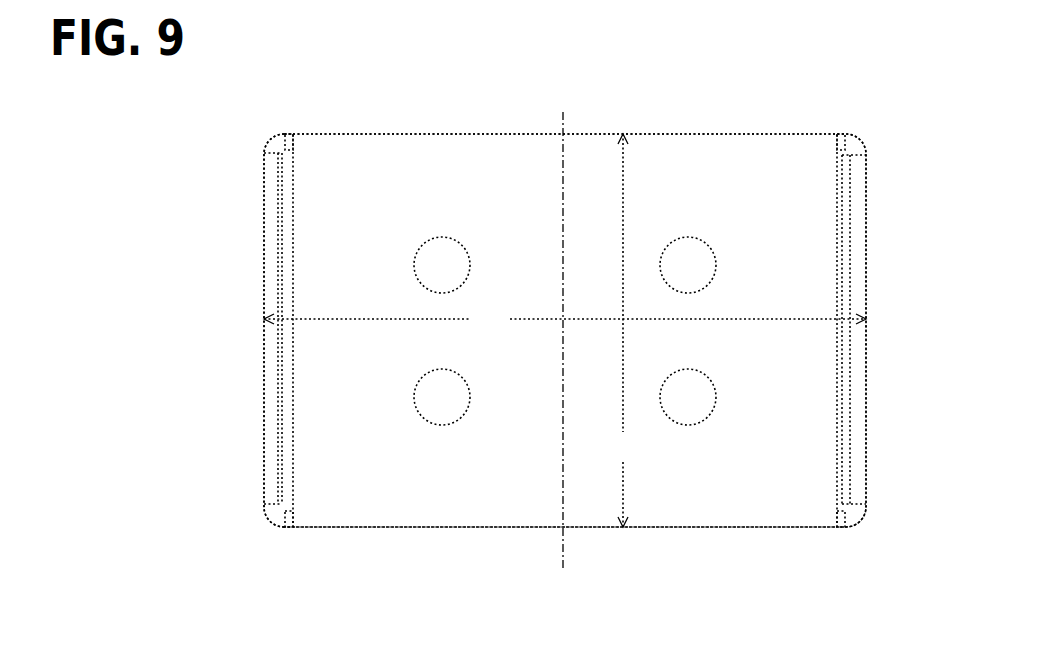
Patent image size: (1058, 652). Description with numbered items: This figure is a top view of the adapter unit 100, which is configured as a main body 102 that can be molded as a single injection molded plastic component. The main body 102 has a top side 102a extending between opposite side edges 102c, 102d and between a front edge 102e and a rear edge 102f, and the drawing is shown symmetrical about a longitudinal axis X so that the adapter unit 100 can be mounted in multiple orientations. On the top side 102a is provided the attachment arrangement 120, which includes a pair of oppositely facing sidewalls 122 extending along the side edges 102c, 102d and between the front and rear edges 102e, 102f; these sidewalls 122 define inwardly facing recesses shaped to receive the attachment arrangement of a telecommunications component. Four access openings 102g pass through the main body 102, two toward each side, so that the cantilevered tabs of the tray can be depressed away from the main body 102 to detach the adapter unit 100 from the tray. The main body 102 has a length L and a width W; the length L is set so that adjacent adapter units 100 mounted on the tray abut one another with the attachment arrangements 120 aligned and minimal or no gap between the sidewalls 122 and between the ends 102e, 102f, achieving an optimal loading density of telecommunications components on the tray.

The adapter unit 100 is at (236, 138).
The main body 102 is at (770, 524).
The top side 102a is at (637, 488).
The side edge 102c is at (265, 402).
The side edge 102d is at (865, 273).
The front edge 102e is at (545, 133).
The rear edge 102f is at (567, 525).
The access openings 102g is at (430, 252).
The attachment arrangement 120 is at (799, 111).
The sidewalls 122 is at (264, 372).